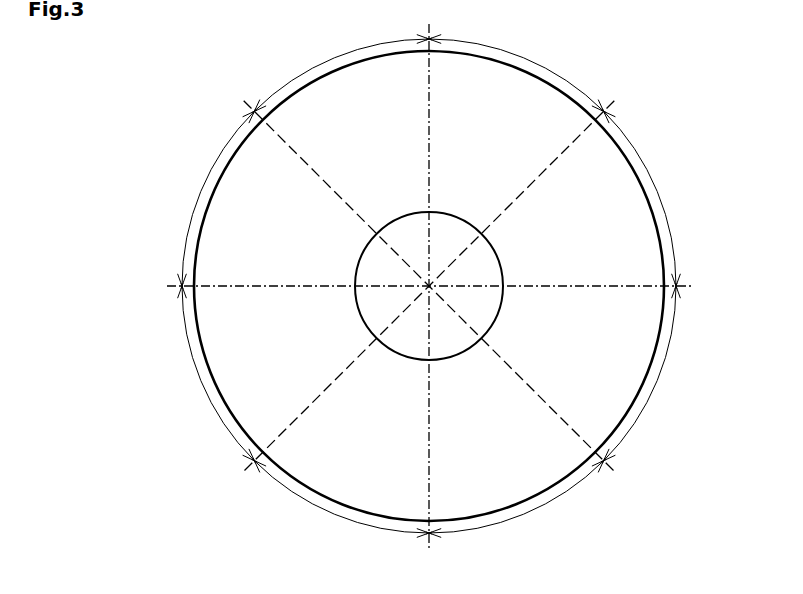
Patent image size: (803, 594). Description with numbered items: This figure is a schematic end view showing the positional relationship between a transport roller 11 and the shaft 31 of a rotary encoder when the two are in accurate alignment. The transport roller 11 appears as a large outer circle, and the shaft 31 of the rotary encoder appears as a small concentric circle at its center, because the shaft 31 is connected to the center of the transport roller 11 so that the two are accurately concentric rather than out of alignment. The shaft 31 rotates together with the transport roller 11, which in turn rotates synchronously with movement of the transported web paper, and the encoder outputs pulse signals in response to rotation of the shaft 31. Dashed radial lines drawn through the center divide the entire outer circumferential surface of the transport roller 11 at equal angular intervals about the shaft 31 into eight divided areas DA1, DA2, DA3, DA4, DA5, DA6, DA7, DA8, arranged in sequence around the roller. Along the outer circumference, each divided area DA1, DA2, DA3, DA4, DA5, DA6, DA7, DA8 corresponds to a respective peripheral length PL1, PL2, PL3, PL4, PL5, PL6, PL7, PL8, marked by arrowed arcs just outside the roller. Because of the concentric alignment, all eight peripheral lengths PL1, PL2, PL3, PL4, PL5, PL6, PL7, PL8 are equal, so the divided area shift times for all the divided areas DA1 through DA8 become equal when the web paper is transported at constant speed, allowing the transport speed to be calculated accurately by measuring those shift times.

The transport roller 11 is at (573, 93).
The shaft 31 is at (447, 213).
The peripheral length PL1 is at (532, 58).
The peripheral length PL2 is at (662, 193).
The peripheral length PL3 is at (660, 378).
The peripheral length PL4 is at (525, 518).
The peripheral length PL5 is at (333, 518).
The peripheral length PL6 is at (193, 373).
The peripheral length PL7 is at (193, 193).
The peripheral length PL8 is at (327, 58).
The divided area DA1 is at (519, 128).
The divided area DA2 is at (606, 233).
The divided area DA3 is at (606, 358).
The divided area DA4 is at (509, 452).
The divided area DA5 is at (384, 452).
The divided area DA6 is at (293, 358).
The divided area DA7 is at (293, 245).
The divided area DA8 is at (391, 128).